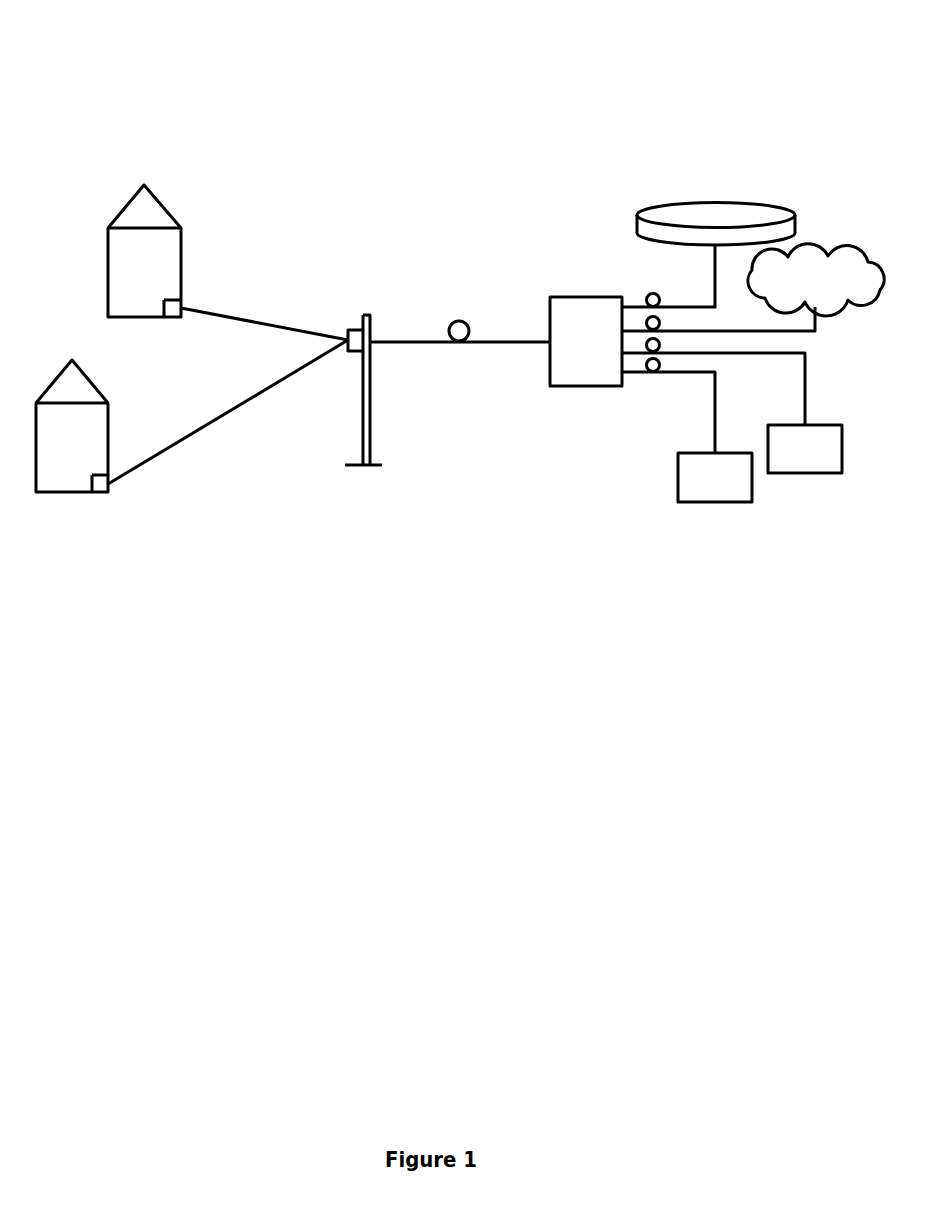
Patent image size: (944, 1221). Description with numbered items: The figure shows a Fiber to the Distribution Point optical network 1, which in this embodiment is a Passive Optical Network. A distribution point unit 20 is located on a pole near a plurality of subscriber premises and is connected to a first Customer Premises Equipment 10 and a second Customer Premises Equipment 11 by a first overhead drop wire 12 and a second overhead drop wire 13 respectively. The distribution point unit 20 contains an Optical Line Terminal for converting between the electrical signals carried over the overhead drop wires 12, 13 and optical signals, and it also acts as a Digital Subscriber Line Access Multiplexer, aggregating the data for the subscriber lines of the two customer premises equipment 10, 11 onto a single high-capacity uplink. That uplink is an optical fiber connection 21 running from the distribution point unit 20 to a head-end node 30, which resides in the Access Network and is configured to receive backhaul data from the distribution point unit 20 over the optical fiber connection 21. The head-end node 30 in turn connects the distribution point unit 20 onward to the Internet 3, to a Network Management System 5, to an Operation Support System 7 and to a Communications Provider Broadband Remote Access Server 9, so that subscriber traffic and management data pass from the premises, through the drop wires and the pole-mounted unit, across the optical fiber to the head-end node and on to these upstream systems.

The Fiber to the Distribution Point optical network 1 is at (684, 52).
The Internet 3 is at (820, 250).
The Network Management System 5 is at (710, 503).
The Operation Support System 7 is at (822, 425).
The Communications Provider Broadband Remote Access Server 9 is at (745, 200).
The first Customer Premises Equipment 10 is at (172, 300).
The second Customer Premises Equipment 11 is at (98, 475).
The first overhead drop wire 12 is at (255, 318).
The second overhead drop wire 13 is at (228, 415).
The distribution point unit 20 is at (352, 328).
The optical fiber connection 21 is at (413, 342).
The head-end node 30 is at (573, 297).